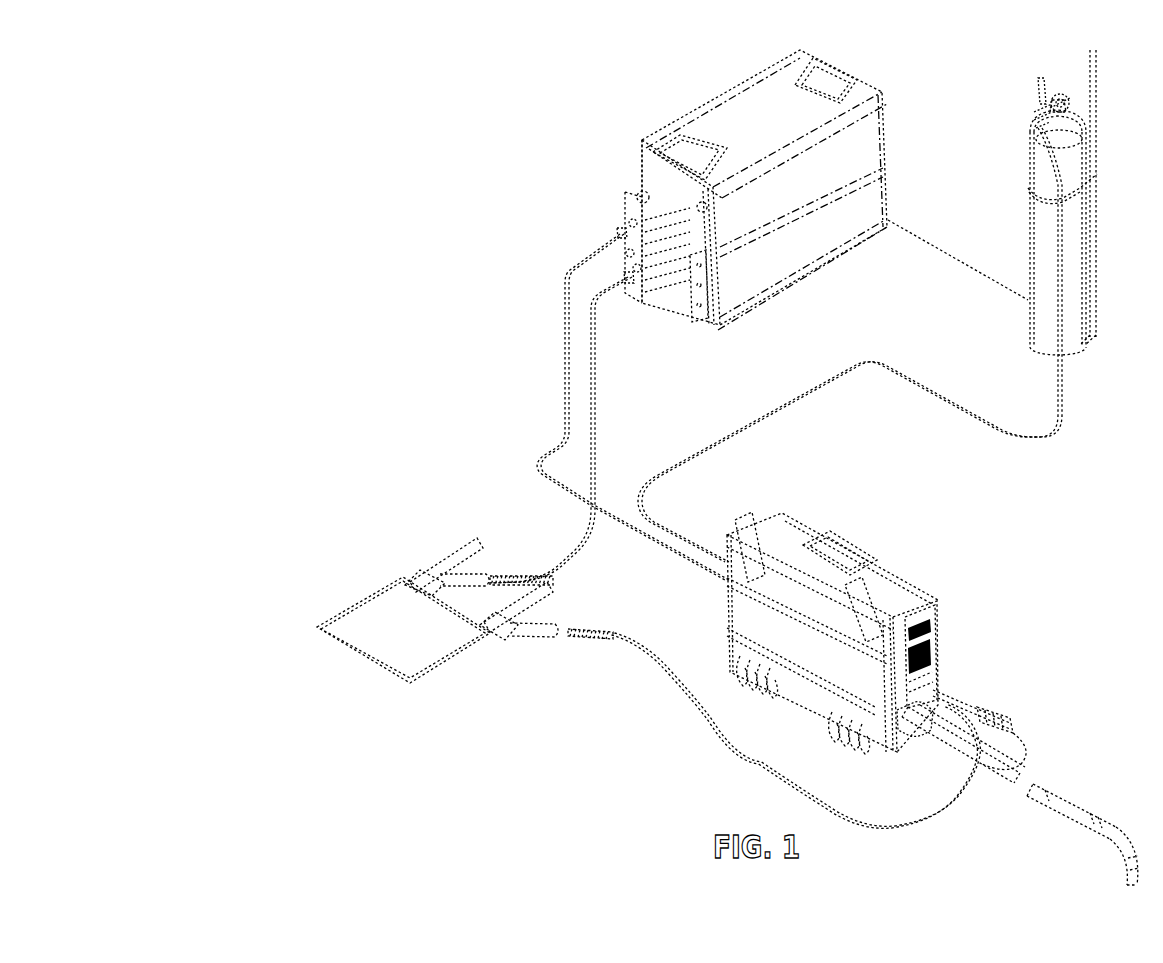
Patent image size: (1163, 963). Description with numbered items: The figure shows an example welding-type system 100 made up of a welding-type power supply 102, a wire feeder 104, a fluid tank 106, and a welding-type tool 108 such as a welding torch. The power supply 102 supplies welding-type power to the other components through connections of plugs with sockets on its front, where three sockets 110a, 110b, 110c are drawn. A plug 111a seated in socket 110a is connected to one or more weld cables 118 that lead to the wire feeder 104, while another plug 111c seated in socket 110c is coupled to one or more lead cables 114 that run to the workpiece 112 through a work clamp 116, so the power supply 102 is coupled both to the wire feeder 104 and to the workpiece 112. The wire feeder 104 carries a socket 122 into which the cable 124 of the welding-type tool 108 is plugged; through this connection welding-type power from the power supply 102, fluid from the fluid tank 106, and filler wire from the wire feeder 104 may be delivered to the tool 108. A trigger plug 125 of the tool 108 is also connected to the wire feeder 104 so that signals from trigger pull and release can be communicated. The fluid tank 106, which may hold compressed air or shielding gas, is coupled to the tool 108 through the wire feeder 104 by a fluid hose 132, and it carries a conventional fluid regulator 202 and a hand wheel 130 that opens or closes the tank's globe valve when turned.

The welding-type system 100 is at (222, 133).
The welding-type power supply 102 is at (735, 115).
The wire feeder 104 is at (906, 568).
The fluid tank 106 is at (1030, 162).
The welding-type tool 108 is at (1093, 810).
The socket 110a is at (634, 218).
The socket 110b is at (624, 254).
The socket 110c is at (644, 272).
The plug 111a is at (624, 226).
The plug 111c is at (637, 278).
The workpiece 112 is at (372, 593).
The lead cables 114 is at (560, 564).
The work clamp 116 is at (433, 553).
The weld cables 118 is at (537, 460).
The socket 122 is at (888, 725).
The cable 124 is at (927, 747).
The trigger plug 125 is at (978, 695).
The hand wheel 130 is at (1080, 97).
The fluid hose 132 is at (880, 355).
The fluid regulator 202 is at (1025, 110).